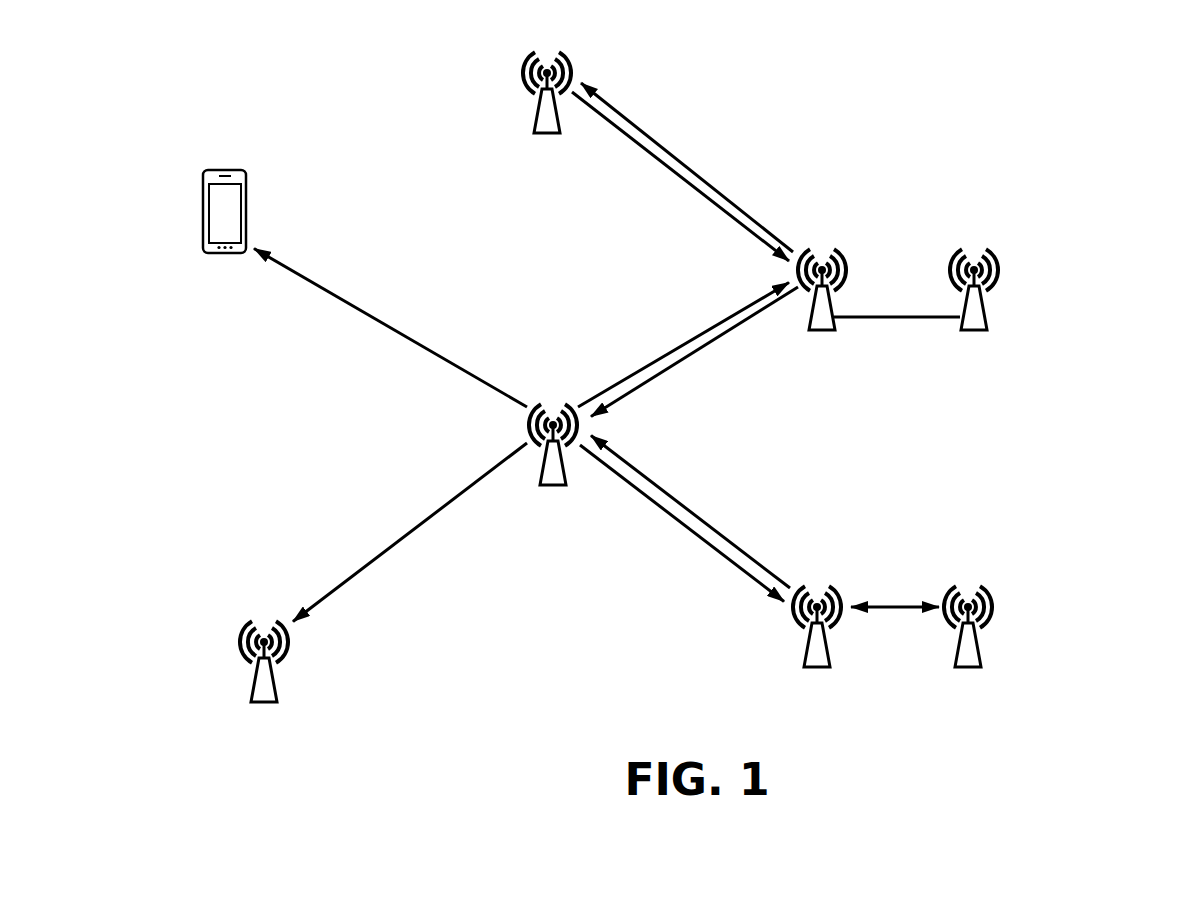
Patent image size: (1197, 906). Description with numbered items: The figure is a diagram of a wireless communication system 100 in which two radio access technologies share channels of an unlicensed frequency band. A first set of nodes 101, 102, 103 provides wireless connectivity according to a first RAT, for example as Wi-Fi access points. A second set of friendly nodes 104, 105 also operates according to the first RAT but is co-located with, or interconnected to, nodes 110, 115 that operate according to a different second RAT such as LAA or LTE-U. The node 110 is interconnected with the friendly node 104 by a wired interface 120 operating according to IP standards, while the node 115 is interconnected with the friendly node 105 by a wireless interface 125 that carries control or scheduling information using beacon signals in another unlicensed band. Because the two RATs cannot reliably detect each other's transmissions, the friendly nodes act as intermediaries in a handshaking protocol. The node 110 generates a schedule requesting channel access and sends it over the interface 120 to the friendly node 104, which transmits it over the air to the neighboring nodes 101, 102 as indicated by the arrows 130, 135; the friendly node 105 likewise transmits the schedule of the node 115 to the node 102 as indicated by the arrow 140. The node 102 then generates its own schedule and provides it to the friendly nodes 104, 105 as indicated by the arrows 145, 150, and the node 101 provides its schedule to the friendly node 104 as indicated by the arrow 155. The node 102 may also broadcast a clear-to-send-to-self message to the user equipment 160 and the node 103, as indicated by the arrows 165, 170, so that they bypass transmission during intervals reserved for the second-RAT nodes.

The wireless communication system 100 is at (1079, 98).
The node 101 is at (543, 136).
The node 102 is at (553, 490).
The node 103 is at (263, 705).
The friendly node 104 is at (817, 333).
The friendly node 105 is at (821, 669).
The node 110 is at (974, 333).
The node 115 is at (971, 669).
The wired interface 120 is at (878, 319).
The wireless interface 125 is at (876, 604).
The arrow 130 is at (720, 192).
The arrow 135 is at (653, 383).
The arrow 140 is at (713, 527).
The arrow 145 is at (705, 328).
The arrow 150 is at (680, 528).
The arrow 155 is at (677, 177).
The user equipment 160 is at (201, 208).
The arrow 165 is at (425, 345).
The arrow 170 is at (367, 570).